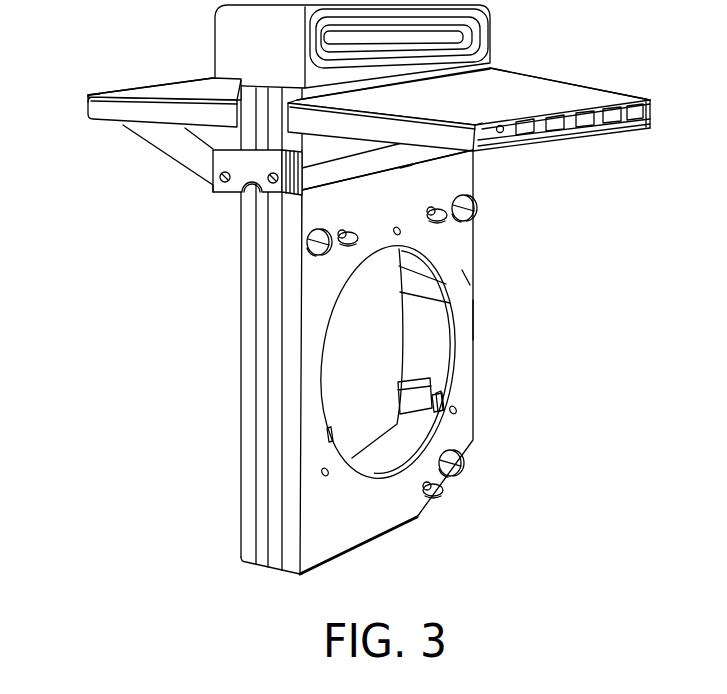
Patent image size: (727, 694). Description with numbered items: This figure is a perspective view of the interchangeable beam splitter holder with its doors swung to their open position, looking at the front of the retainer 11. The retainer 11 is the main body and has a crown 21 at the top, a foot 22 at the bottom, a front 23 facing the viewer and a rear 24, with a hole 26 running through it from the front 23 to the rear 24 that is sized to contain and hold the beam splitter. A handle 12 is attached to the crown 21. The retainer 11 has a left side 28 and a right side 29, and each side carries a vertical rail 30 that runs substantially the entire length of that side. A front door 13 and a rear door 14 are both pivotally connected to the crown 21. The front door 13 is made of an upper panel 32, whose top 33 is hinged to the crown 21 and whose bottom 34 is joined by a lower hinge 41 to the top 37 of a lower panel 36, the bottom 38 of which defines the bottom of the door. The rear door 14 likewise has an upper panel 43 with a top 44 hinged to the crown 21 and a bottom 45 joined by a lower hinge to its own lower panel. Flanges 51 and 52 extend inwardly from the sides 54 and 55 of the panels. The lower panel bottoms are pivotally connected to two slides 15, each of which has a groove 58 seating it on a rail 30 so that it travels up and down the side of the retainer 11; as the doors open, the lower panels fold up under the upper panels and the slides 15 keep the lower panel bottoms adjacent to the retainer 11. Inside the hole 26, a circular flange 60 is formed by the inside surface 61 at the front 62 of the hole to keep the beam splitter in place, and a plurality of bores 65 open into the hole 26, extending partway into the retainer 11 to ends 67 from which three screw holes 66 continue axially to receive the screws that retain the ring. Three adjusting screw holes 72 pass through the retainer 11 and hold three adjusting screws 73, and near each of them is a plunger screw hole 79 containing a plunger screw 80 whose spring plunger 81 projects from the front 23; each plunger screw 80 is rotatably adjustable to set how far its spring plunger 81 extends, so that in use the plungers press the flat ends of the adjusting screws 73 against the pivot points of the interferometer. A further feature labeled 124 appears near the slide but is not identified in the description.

The retainer 11 is at (362, 548).
The handle 12 is at (493, 22).
The front door 13 is at (602, 93).
The rear door 14 is at (165, 80).
The slide 15 is at (228, 189).
The crown 21 is at (250, 100).
The foot 22 is at (412, 522).
The front 23 is at (463, 278).
The rear 24 is at (240, 268).
The hole 26 is at (398, 352).
The left side 28 is at (476, 318).
The right side 29 is at (250, 352).
The vertical rail 30 is at (263, 450).
The upper panel 32 is at (497, 82).
The top 33 is at (432, 87).
The bottom 34 is at (578, 115).
The lower panel 36 is at (545, 160).
The top 37 is at (562, 115).
The bottom 38 is at (404, 176).
The lower hinge 41 is at (603, 118).
The upper panel 43 is at (145, 90).
The top 44 is at (236, 97).
The bottom 45 is at (115, 88).
The flange 51 is at (98, 112).
The flange 52 is at (165, 145).
The side 54 is at (165, 105).
The side 55 is at (140, 137).
The groove 58 is at (265, 152).
The circular flange 60 is at (448, 293).
The inside surface 61 is at (413, 315).
The front 62 is at (458, 350).
The bore 65 is at (400, 397).
The screw hole 66 is at (398, 232).
The end 67 is at (410, 382).
The adjusting screw hole 72 is at (320, 258).
The adjusting screw 73 is at (315, 232).
The plunger screw hole 79 is at (355, 246).
The plunger screw 80 is at (345, 232).
The spring plunger 81 is at (362, 246).
The notch 124 is at (245, 205).